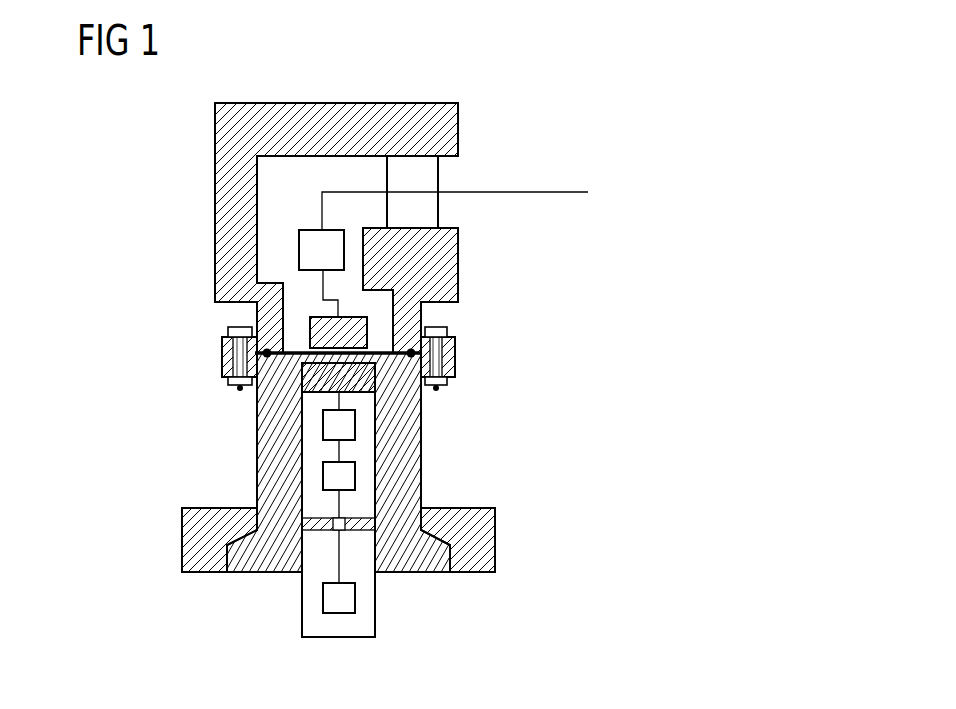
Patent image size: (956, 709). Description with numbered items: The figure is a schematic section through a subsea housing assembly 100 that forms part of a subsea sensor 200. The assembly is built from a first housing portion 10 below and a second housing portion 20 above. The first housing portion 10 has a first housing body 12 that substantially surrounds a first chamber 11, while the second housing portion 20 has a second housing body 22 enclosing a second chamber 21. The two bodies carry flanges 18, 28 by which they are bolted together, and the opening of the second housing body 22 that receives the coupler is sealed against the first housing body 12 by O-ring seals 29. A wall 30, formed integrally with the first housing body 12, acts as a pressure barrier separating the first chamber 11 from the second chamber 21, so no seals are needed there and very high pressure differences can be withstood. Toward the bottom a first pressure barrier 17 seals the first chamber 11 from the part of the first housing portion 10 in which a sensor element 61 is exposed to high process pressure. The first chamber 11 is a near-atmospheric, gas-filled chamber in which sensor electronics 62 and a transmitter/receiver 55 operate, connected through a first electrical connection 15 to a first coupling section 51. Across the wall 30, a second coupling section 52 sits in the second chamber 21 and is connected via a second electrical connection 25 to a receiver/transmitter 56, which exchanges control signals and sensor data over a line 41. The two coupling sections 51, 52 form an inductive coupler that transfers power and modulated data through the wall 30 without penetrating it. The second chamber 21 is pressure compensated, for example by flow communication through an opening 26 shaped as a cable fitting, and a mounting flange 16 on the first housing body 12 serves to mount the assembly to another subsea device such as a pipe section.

The subsea housing assembly 100 is at (549, 91).
The first housing portion 10 is at (178, 406).
The first chamber 11 is at (325, 450).
The first housing body 12 is at (270, 437).
The first electrical connection 15 is at (338, 400).
The mounting flange 16 is at (195, 538).
The first pressure barrier 17 is at (318, 527).
The flange 18 is at (457, 365).
The second housing portion 20 is at (148, 199).
The second chamber 21 is at (270, 205).
The second housing body 22 is at (318, 112).
The second electrical connection 25 is at (293, 280).
The opening 26 is at (412, 168).
The flange 28 is at (457, 345).
The O-ring seals 29 is at (258, 347).
The wall 30 is at (297, 345).
The line 41 is at (528, 192).
The first coupling section 51 is at (380, 386).
The second coupling section 52 is at (355, 332).
The transmitter/receiver 55 is at (343, 425).
The receiver/transmitter 56 is at (316, 243).
The sensor element 61 is at (345, 600).
The sensor electronics 62 is at (343, 477).
The subsea sensor 200 is at (494, 628).